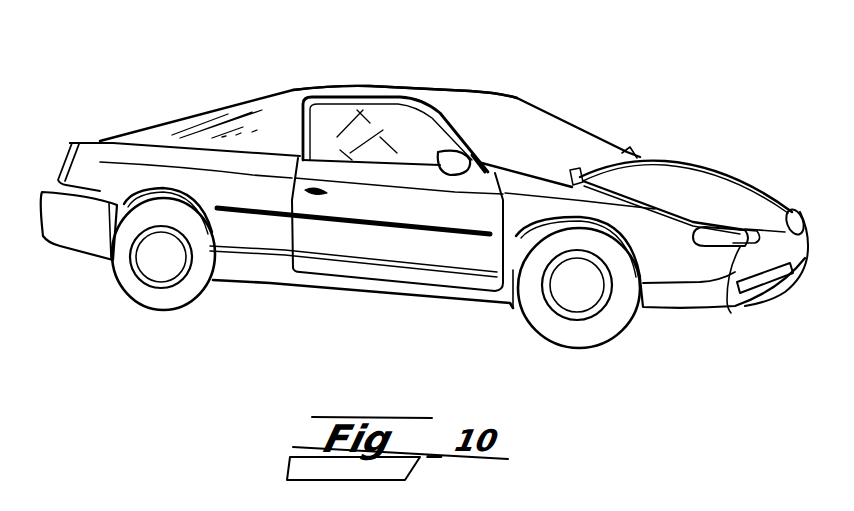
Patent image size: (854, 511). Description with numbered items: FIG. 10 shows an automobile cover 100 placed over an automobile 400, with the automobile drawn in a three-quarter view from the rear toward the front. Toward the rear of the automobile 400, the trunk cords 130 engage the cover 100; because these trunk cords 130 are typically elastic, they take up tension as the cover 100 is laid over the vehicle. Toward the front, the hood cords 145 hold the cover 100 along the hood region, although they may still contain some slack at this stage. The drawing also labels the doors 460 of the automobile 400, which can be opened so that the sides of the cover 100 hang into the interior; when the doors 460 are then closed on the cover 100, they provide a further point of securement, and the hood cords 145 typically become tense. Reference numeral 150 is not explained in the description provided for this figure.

The automobile 400 is at (160, 68).
The automobile cover 100 is at (467, 100).
The trunk cords 130 is at (97, 141).
The hood cords 145 is at (720, 176).
The headlamp assembly 150 is at (790, 207).
The doors 460 is at (412, 242).